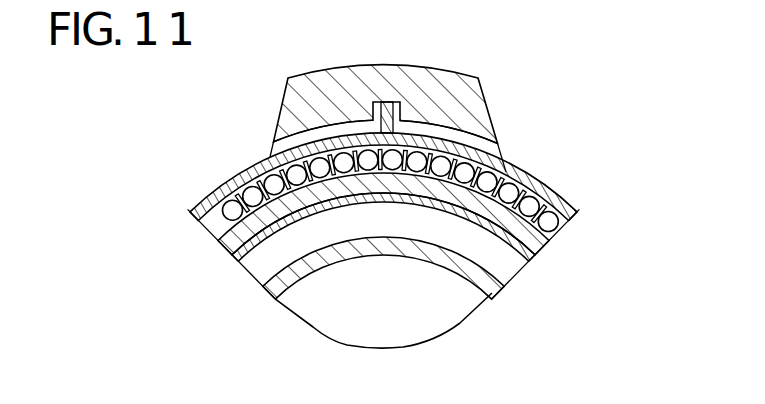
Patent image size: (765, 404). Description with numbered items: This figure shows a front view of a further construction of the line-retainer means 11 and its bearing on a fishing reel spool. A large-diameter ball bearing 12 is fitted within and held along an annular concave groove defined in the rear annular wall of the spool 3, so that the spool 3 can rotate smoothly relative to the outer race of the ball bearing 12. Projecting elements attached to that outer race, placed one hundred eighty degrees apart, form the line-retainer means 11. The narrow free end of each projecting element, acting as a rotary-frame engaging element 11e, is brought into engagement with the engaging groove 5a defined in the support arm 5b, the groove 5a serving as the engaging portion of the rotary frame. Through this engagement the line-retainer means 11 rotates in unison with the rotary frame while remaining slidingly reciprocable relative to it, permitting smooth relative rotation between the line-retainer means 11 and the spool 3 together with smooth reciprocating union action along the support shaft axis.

The ball bearing 3 is at (396, 204).
The housing inner peripheral surface 5a is at (422, 122).
The housing 5b is at (480, 104).
The outer ring 11 is at (547, 186).
The engaging projection of outer ring 11e is at (372, 108).
The retainer 12 is at (252, 183).